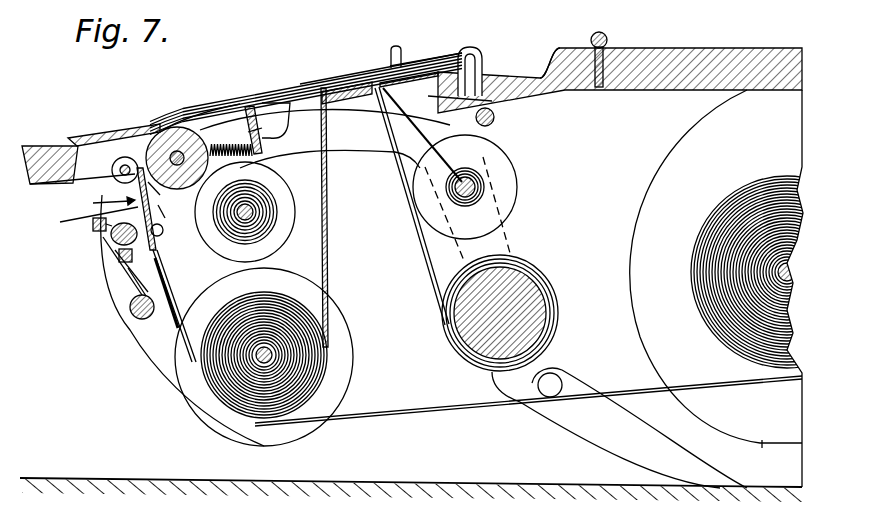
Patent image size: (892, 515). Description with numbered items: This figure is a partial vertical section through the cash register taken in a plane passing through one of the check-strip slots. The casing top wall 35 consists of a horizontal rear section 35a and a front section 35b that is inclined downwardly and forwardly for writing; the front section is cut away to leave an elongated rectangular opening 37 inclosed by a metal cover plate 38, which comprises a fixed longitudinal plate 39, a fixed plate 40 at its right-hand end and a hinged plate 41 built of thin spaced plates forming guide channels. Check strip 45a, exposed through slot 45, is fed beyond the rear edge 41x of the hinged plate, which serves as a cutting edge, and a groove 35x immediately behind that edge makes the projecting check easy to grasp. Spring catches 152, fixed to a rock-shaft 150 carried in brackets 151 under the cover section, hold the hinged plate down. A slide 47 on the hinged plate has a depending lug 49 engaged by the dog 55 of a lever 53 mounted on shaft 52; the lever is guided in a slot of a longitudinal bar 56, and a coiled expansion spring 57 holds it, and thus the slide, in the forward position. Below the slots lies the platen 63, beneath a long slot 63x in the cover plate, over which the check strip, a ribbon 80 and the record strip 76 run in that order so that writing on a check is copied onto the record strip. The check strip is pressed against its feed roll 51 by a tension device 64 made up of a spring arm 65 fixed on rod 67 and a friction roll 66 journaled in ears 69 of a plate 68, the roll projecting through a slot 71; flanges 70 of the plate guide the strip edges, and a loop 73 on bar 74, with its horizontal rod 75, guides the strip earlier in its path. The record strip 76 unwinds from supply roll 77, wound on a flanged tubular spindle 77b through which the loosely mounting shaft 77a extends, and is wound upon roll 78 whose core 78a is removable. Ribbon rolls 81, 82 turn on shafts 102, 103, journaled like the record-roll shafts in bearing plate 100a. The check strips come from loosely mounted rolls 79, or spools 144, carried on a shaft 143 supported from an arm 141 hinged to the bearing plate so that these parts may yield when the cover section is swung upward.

The top wall 35 is at (35, 140).
The rear top section 35a is at (667, 50).
The front top section 35b is at (81, 192).
The longitudinally extending groove 35x is at (544, 63).
The fixed plate 39 is at (115, 130).
The feed roll 51 is at (163, 127).
The slot 45 is at (340, 83).
The check strip 45a is at (190, 116).
The cover plate 38 is at (209, 104).
The coiled expansion spring 57 is at (248, 105).
The hinged plate 41 is at (264, 102).
The depending lug 49 is at (267, 96).
The dog 55 is at (290, 90).
The long slot 63x is at (320, 85).
The slide 47 is at (381, 64).
The fixed plate 40 is at (393, 45).
The spring catch 152 is at (465, 47).
The rear edge 41x is at (480, 56).
The elongated rectangular opening 37 is at (495, 102).
The rock-shaft 150 is at (494, 120).
The bracket 151 is at (530, 125).
The ears 69 is at (118, 168).
The friction roll 66 is at (124, 161).
The slot 71 is at (114, 191).
The tension device 64 is at (168, 320).
The plate 68 is at (89, 221).
The rod or bar 67 is at (108, 236).
The horizontal rod 75 is at (112, 252).
The loop 73 is at (140, 270).
The bar 74 is at (130, 307).
The spring arm 65 is at (160, 262).
The shaft 52 is at (167, 201).
The lateral extensions 70 is at (177, 222).
The record strip 76 is at (298, 218).
The shaft 102 is at (252, 210).
The ribbon roll 81 is at (272, 226).
The ribbon 80 is at (280, 184).
The longitudinal bar 56 is at (323, 176).
The platen 63 is at (355, 100).
The lever 53 is at (327, 126).
The flanged tubular spindle 77b is at (312, 312).
The bearing plate 100a is at (494, 243).
The ribbon roll 82 is at (485, 184).
The shaft 103 is at (482, 193).
The roll 78 is at (463, 357).
The core 78a is at (533, 279).
The arm 141 is at (597, 420).
The record supply roll 77 is at (323, 347).
The shaft 77a is at (272, 357).
The spool 144 is at (641, 198).
The shaft 143 is at (712, 391).
The roll 79 is at (688, 300).